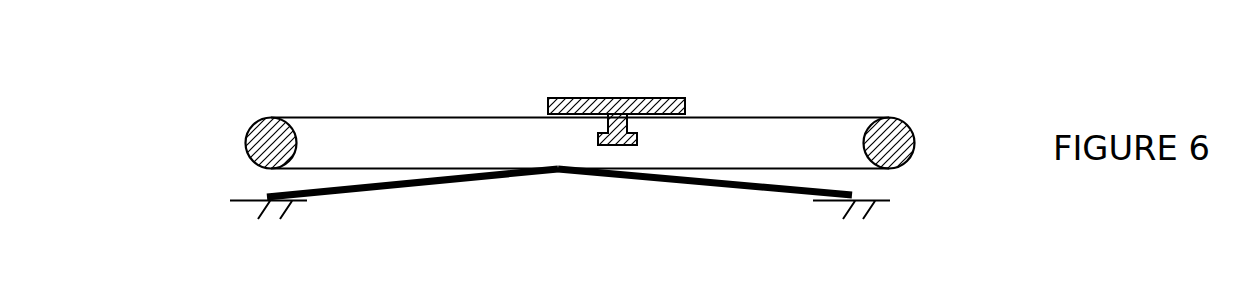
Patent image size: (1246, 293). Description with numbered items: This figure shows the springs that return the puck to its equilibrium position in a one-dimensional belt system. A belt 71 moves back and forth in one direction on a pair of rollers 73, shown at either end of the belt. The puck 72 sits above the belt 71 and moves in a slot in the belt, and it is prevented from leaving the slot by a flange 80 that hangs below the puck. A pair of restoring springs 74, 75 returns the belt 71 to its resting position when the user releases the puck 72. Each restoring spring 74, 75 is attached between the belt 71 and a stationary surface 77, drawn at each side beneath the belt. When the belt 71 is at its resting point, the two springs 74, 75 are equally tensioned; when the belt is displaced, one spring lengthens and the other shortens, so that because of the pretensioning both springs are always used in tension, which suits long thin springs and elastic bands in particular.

The belt 71 is at (787, 117).
The puck 72 is at (577, 97).
The rollers 73 is at (246, 150).
The restoring spring 74 is at (370, 192).
The restoring spring 75 is at (757, 192).
The stationary surface 77 is at (248, 201).
The flange 80 is at (636, 141).